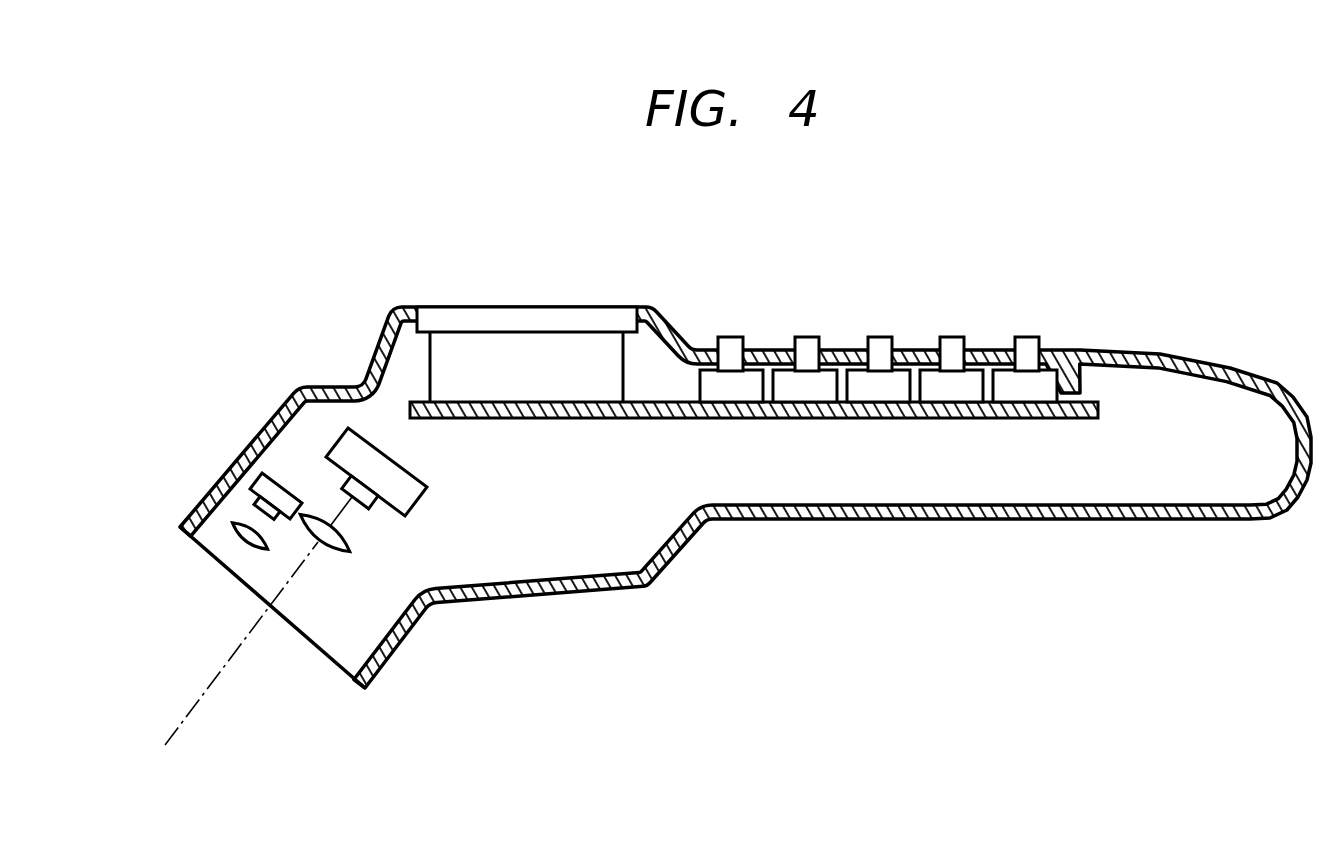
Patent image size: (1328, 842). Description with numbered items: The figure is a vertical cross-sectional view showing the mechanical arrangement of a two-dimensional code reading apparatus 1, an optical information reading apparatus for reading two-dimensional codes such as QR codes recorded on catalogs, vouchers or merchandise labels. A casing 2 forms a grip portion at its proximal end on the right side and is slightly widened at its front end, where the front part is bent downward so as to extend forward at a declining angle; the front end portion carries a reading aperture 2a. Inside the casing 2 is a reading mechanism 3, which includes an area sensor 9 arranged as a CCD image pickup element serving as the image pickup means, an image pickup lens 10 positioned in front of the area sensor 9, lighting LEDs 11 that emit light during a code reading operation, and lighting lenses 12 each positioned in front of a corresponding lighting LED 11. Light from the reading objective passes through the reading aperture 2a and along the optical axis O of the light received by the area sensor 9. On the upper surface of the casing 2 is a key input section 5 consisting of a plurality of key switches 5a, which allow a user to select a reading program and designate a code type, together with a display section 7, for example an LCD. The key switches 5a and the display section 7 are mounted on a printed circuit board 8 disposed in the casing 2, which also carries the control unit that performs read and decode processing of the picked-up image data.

The two-dimensional code reading apparatus 1 is at (1090, 301).
The casing 2 is at (937, 521).
The reading aperture 2a is at (313, 647).
The reading mechanism 3 is at (317, 426).
The key input section 5 is at (878, 309).
The key switches 5a is at (731, 336).
The display section 7 is at (524, 304).
The printed circuit board 8 is at (636, 420).
The area sensor 9 is at (418, 477).
The image pickup lens 10 is at (351, 547).
The lighting LEDs 11 is at (243, 453).
The lighting lenses 12 is at (238, 538).
The optical axis O is at (179, 727).